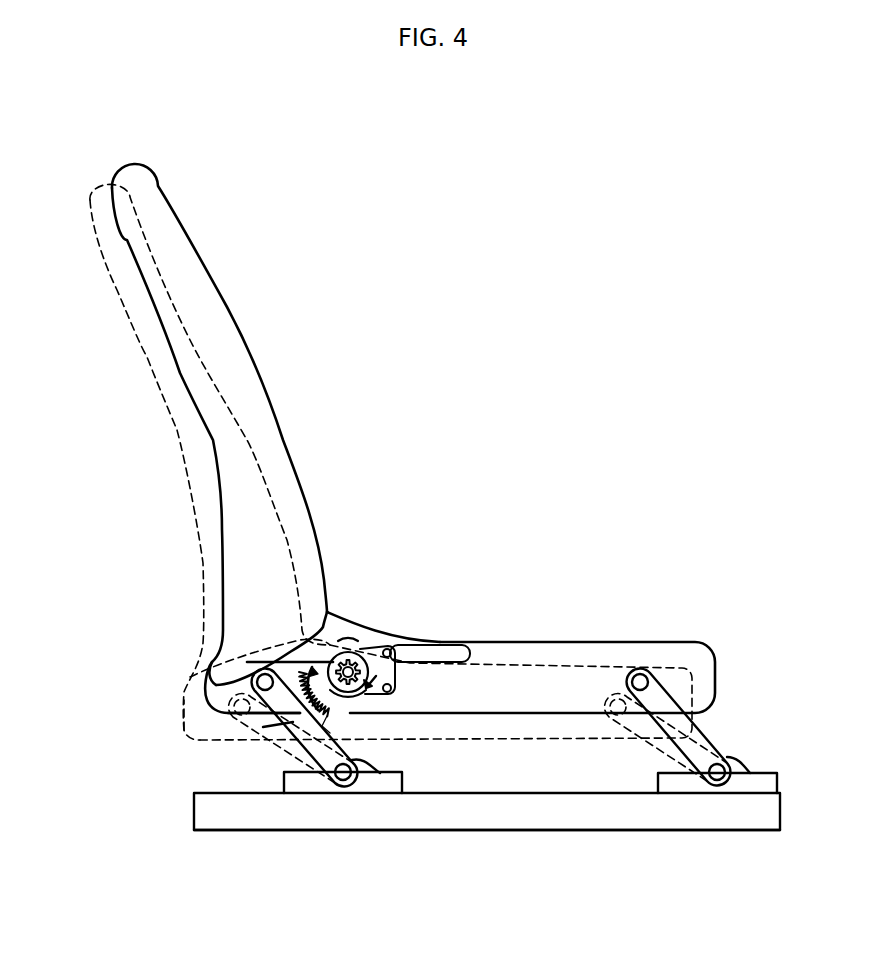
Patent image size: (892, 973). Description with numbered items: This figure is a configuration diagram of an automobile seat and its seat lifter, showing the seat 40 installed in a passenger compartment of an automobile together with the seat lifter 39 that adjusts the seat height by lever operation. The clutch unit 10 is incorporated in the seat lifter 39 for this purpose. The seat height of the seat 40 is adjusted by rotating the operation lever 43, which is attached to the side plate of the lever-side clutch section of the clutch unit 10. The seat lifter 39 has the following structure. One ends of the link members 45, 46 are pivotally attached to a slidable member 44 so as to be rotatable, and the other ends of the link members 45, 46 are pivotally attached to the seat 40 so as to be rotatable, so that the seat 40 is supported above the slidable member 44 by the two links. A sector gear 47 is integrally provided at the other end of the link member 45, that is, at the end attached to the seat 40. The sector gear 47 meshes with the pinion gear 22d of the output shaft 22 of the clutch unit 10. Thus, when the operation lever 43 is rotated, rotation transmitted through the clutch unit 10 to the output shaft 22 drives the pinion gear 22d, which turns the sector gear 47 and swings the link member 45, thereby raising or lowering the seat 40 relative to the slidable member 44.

The clutch unit 10 is at (400, 686).
The output shaft 22 is at (350, 643).
The pinion gear 22d is at (367, 642).
The seat lifter 39 is at (487, 843).
The seat 40 is at (558, 610).
The operation lever 43 is at (448, 645).
The slidable member 44 is at (585, 818).
The link member 45 is at (292, 722).
The link member 46 is at (697, 733).
The sector gear 47 is at (347, 713).